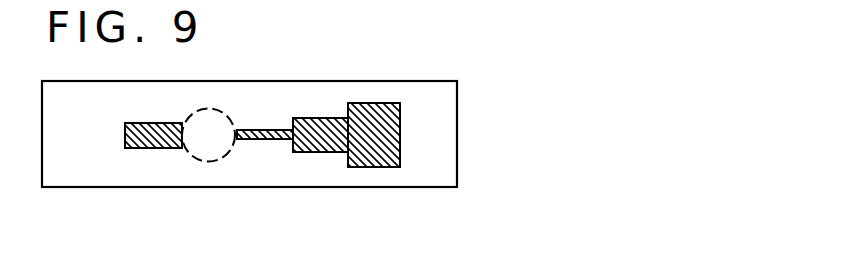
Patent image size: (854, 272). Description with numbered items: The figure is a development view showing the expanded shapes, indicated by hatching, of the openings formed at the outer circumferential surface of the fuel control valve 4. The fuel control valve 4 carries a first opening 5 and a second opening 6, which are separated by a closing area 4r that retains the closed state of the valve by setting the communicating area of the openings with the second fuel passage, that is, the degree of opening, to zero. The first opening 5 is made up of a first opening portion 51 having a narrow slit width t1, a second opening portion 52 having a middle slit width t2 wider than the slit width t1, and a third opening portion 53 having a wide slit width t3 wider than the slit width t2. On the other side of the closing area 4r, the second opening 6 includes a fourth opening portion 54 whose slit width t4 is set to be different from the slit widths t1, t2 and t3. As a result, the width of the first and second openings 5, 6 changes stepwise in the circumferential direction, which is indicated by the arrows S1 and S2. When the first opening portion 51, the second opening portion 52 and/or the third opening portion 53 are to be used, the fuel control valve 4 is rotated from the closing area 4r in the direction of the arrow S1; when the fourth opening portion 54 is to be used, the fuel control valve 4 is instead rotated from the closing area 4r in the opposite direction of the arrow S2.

The fuel control valve 4 is at (457, 133).
The closing area 4r is at (182, 193).
The first opening 5 is at (336, 166).
The second opening 6 is at (128, 175).
The first opening portion 51 is at (278, 139).
The second opening portion 52 is at (330, 152).
The third opening portion 53 is at (390, 167).
The fourth opening portion 54 is at (150, 148).
The slit width of first opening portion t1 is at (258, 157).
The slit width of second opening portion t2 is at (313, 170).
The slit width of third opening portion t3 is at (371, 180).
The slit width of fourth opening portion t4 is at (133, 160).
The arrow S1 is at (254, 70).
The arrow S2 is at (318, 68).